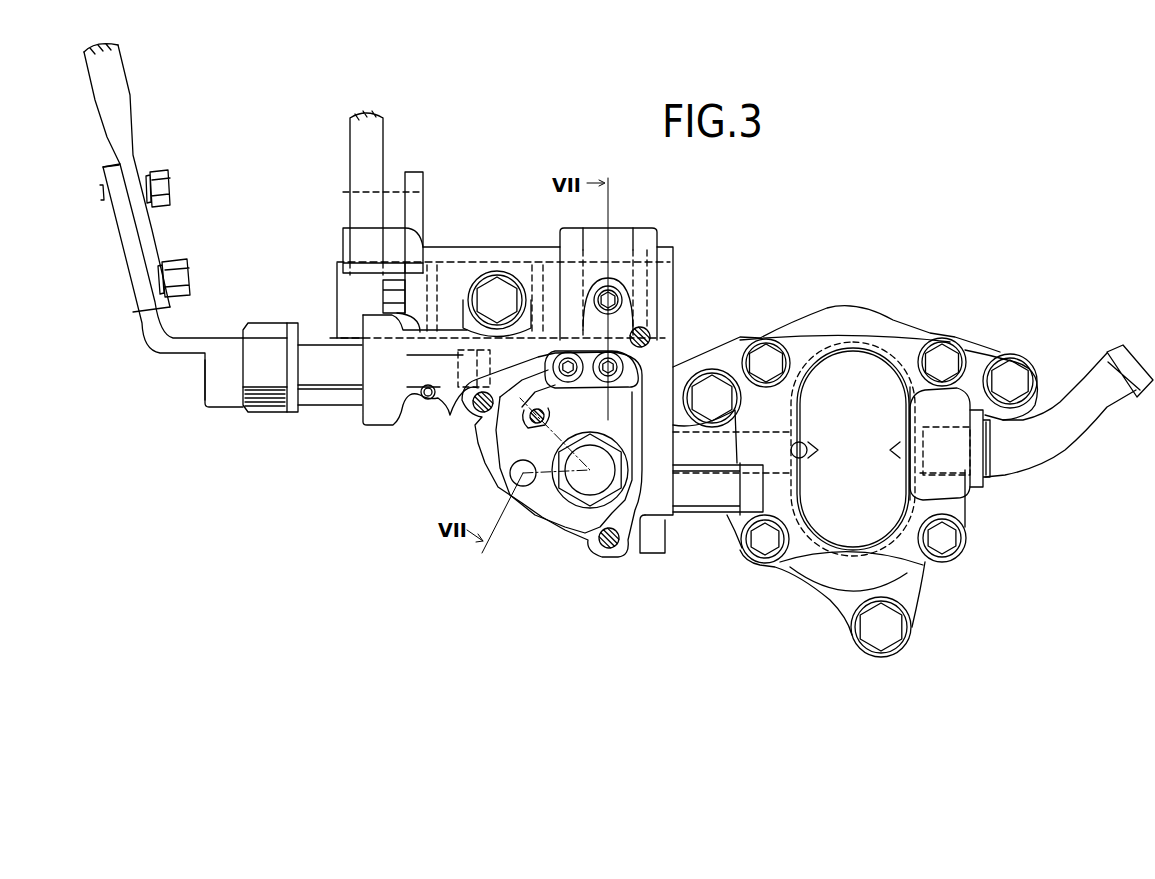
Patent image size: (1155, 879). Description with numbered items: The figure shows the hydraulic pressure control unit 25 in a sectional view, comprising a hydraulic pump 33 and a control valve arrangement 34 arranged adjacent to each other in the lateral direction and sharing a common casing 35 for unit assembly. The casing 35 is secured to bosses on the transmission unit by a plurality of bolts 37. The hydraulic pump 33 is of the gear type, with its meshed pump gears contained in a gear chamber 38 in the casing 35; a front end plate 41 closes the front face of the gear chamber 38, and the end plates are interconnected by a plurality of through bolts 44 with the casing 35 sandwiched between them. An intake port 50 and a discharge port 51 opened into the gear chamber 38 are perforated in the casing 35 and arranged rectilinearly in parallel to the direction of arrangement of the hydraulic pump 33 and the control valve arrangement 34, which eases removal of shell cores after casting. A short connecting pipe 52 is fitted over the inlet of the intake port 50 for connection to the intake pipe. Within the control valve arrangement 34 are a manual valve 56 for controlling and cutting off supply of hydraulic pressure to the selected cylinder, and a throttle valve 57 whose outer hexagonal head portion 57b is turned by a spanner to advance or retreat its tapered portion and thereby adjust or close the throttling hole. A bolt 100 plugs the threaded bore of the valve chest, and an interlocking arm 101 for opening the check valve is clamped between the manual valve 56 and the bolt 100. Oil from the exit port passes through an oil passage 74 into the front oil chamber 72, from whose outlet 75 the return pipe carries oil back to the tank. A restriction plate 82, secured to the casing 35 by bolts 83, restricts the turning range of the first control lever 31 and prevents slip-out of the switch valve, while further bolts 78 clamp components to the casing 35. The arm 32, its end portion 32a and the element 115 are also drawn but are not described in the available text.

The hydraulic pressure control unit 25 is at (776, 254).
The first control lever 31 is at (380, 138).
The arm 32 is at (117, 69).
The flange of arm 32a is at (222, 400).
The hydraulic pump 33 is at (853, 310).
The control valve arrangement 34 is at (462, 240).
The casing 35 is at (507, 247).
The bolt 37 is at (722, 409).
The gear chamber 38 is at (880, 350).
The front end plate 41 is at (808, 350).
The through bolt 44 is at (776, 374).
The intake port 50 is at (940, 433).
The discharge port 51 is at (762, 437).
The connecting pipe 52 is at (1073, 448).
The manual valve 56 is at (566, 465).
The throttle valve 57 is at (330, 390).
The hexagonal head portion 57b is at (266, 408).
The oil chamber 72 is at (500, 430).
The oil passage 74 is at (511, 472).
The outlet 75 is at (660, 508).
The bolt 78 is at (477, 403).
The restriction plate 82 is at (415, 178).
The bolt 83 is at (388, 300).
The bolt 100 is at (603, 449).
The interlocking arm 101 is at (568, 417).
The recess 115 is at (526, 426).